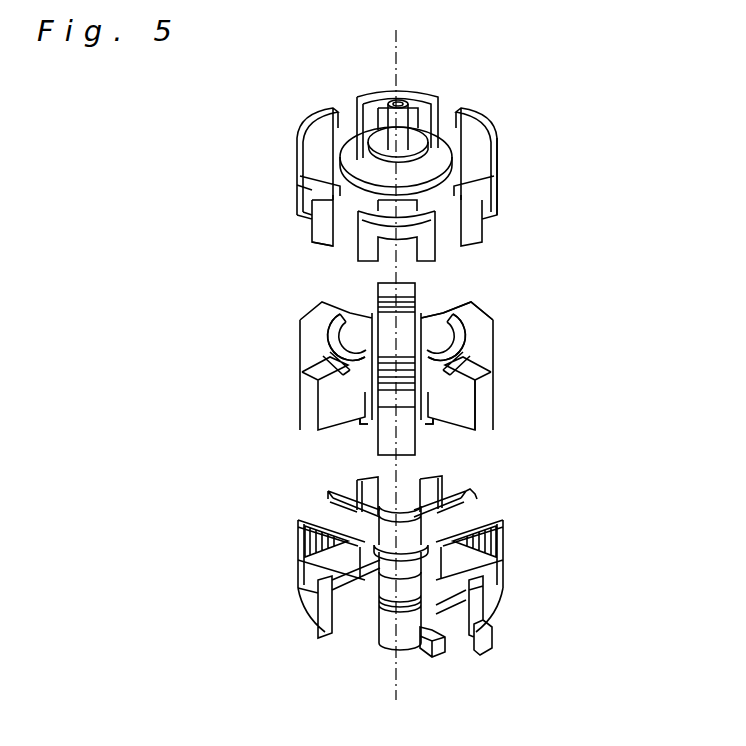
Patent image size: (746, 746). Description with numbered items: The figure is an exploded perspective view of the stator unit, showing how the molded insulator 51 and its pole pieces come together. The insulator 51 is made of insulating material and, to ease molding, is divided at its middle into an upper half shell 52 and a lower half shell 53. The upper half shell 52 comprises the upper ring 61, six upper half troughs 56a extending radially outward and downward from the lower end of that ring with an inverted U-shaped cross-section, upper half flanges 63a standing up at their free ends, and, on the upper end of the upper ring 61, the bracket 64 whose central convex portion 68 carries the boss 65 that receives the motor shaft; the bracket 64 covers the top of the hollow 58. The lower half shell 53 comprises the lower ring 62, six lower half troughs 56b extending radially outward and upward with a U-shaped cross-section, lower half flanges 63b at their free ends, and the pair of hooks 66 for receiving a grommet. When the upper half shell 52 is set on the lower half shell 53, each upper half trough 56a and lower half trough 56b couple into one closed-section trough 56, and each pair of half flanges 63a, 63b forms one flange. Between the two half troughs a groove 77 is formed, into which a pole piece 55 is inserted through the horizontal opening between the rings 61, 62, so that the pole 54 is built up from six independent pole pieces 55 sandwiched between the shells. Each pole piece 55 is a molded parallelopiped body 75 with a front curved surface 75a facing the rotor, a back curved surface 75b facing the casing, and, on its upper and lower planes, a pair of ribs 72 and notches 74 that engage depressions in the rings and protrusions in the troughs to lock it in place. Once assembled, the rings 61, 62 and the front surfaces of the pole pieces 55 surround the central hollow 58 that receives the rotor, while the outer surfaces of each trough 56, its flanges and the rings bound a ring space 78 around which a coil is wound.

The molded insulator 51 is at (283, 172).
The upper half shell 52 is at (467, 137).
The lower half shell 53 is at (500, 535).
The pole 54 is at (498, 345).
The pole piece 55 is at (313, 313).
The trough 56 is at (303, 235).
The upper half trough 56a is at (342, 232).
The lower half trough 56b is at (343, 613).
The hollow 58 is at (388, 577).
The upper ring 61 is at (450, 173).
The lower ring 62 is at (413, 545).
The upper half flange 63a is at (300, 195).
The lower half flange 63b is at (313, 618).
The bracket 64 is at (325, 117).
The boss 65 is at (366, 115).
The hook 66 is at (442, 650).
The convex portion 68 is at (443, 122).
The rib 72 is at (372, 313).
The notch 74 is at (310, 340).
The parallelopiped body 75 is at (467, 397).
The front curved surface 75a is at (437, 303).
The back curved surface 75b is at (487, 412).
The groove 77 is at (307, 223).
The ring space 78 is at (297, 188).